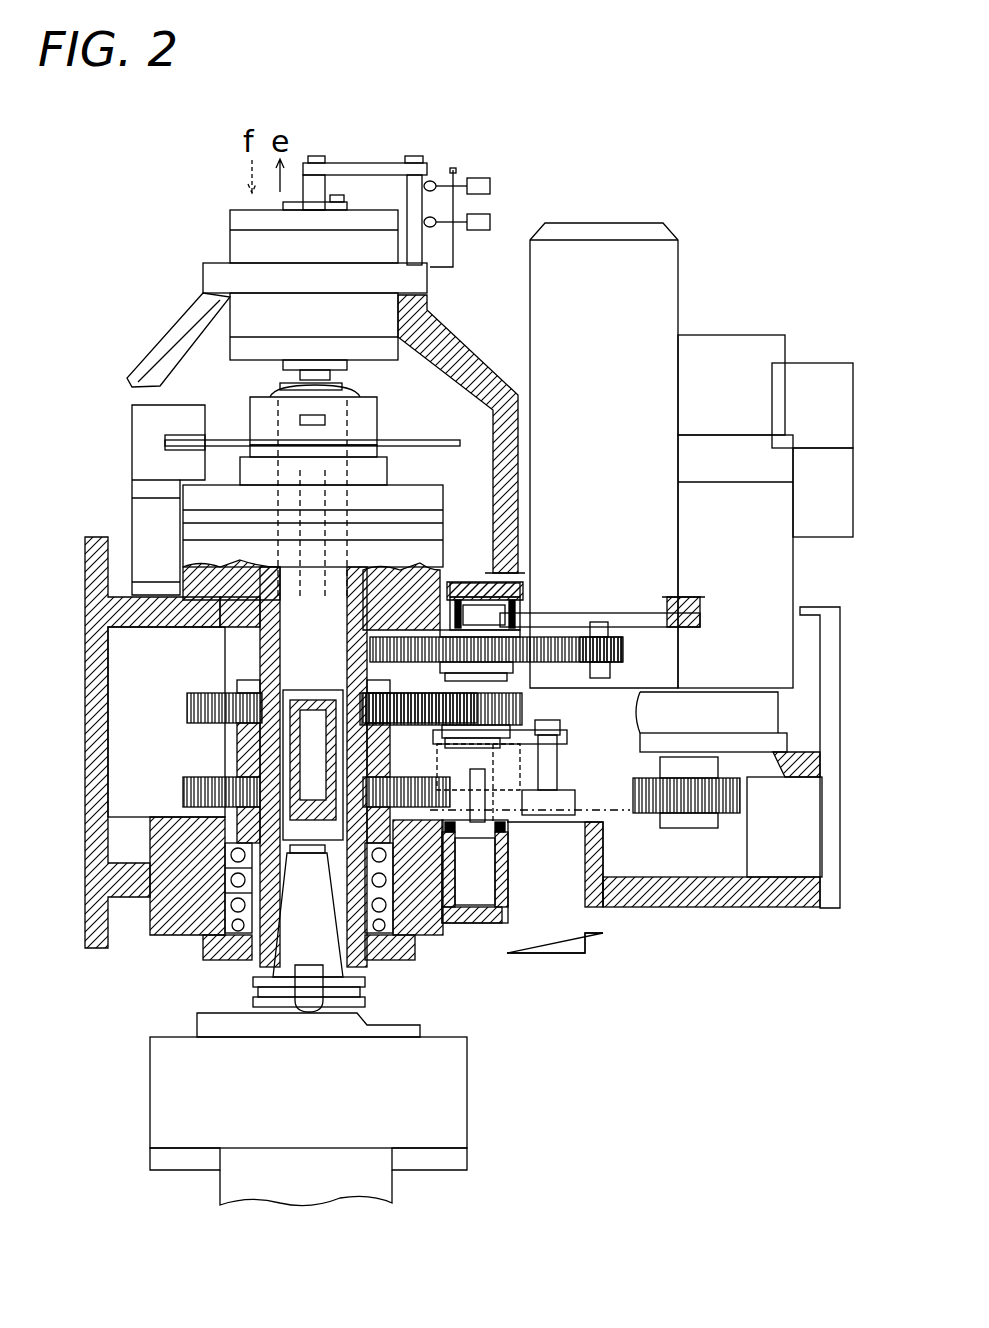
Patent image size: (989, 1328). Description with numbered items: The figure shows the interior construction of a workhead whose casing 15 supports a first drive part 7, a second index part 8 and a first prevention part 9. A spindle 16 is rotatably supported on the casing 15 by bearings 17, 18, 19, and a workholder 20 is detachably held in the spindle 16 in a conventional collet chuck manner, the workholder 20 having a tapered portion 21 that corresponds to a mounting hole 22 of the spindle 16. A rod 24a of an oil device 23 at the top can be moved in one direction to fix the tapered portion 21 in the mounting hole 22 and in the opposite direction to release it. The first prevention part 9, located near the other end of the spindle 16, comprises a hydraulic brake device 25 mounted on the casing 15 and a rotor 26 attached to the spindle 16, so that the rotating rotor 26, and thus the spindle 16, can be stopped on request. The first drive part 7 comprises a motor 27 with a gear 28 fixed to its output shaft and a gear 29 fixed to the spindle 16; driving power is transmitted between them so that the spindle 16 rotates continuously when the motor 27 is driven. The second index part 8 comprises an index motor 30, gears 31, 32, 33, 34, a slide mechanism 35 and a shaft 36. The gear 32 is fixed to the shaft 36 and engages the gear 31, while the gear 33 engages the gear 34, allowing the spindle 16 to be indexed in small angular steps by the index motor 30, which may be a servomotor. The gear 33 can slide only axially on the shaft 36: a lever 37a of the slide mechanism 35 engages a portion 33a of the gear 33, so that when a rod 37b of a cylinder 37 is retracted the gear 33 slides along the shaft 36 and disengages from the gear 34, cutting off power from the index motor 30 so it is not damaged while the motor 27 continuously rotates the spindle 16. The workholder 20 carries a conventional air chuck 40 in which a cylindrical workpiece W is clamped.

The first drive part 7 is at (750, 658).
The second index part 8 is at (629, 376).
The first prevention part 9 is at (216, 384).
The casing 15 is at (720, 900).
The spindle 16 is at (375, 970).
The bearing 17 is at (190, 950).
The bearing 18 is at (215, 895).
The bearing 19 is at (200, 835).
The workholder 20 is at (465, 1037).
The tapered portion 21 is at (285, 945).
The mounting hole 22 is at (415, 1018).
The oil device 23 is at (240, 245).
The rod 24a is at (330, 580).
The hydraulic brake device 25 is at (130, 440).
The rotor 26 is at (413, 445).
The motor 27 is at (740, 800).
The gear 28 is at (750, 810).
The gear 29 is at (183, 790).
The index motor 30 is at (665, 558).
The gear 31 is at (625, 650).
The gear 32 is at (520, 637).
The gear 33 is at (500, 637).
The portion 33a is at (525, 700).
The gear 34 is at (187, 708).
The slide mechanism 35 is at (485, 870).
The shaft 36 is at (530, 825).
The cylinder 37 is at (565, 940).
The lever 37a is at (548, 810).
The rod 37b is at (540, 780).
The air chuck 40 is at (467, 1112).
The workpiece W is at (392, 1200).